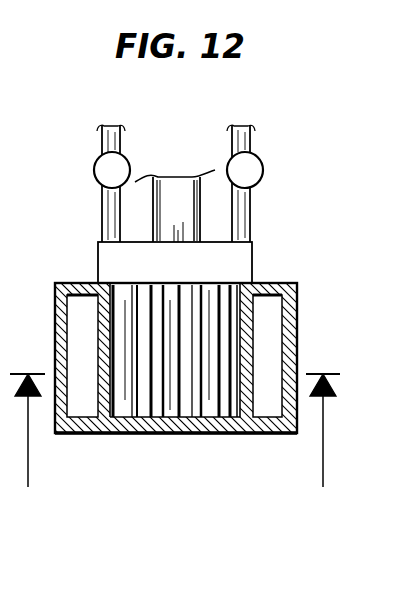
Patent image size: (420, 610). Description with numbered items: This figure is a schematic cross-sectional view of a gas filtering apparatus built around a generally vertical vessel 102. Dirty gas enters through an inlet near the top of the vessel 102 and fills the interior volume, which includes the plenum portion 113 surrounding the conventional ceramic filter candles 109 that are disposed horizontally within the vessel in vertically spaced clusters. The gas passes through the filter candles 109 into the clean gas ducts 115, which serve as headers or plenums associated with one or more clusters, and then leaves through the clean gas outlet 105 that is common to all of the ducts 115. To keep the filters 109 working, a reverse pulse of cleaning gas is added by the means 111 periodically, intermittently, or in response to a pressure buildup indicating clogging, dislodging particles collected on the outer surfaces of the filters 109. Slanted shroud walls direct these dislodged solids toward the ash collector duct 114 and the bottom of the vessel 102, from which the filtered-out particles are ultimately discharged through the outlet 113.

The vessel 102 is at (272, 420).
The clean gas outlet 105 is at (175, 187).
The ceramic filter candles 109 is at (176, 408).
The reverse pulse cleaning gas means 111 is at (101, 150).
The filtered-out particles outlet 113 is at (272, 344).
The ash collector duct 114 is at (75, 336).
The clean gas ducts 115 is at (222, 247).